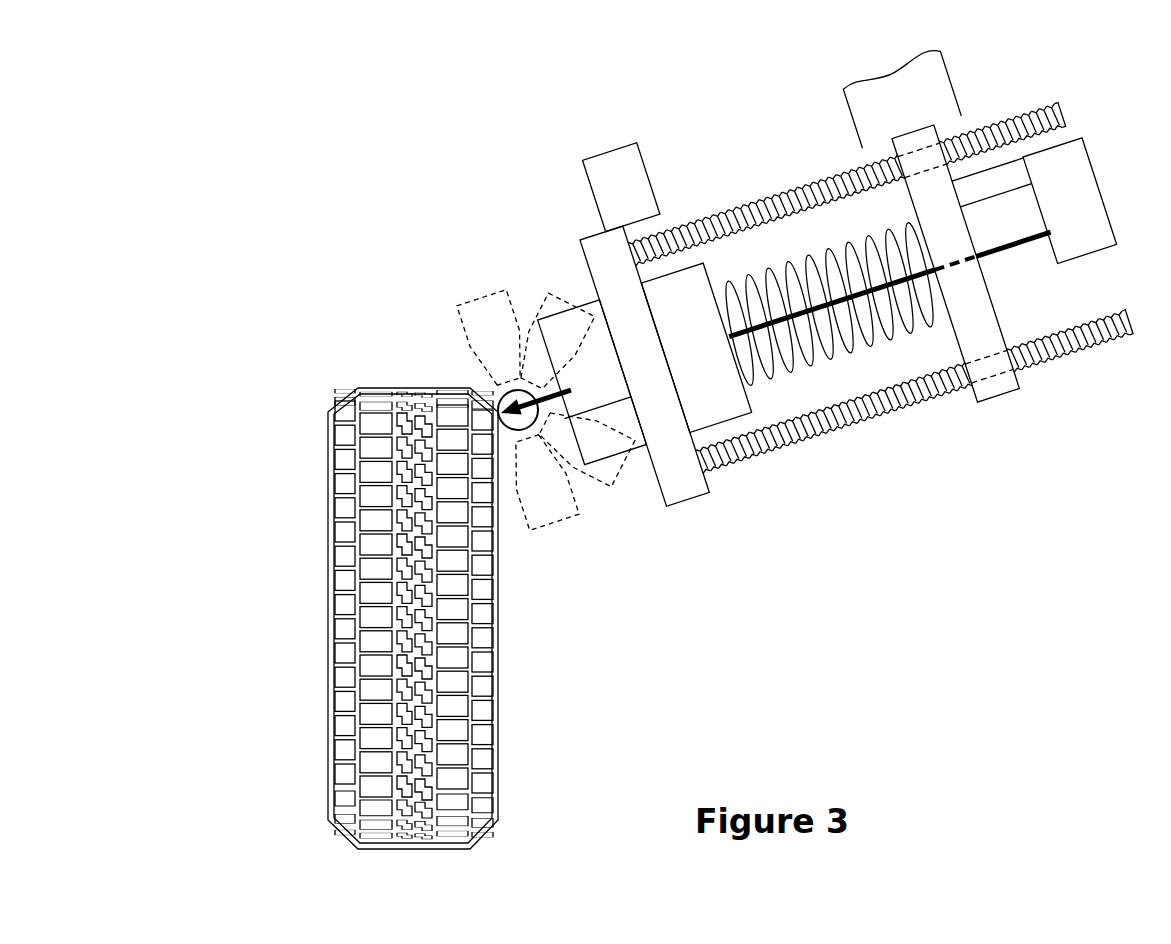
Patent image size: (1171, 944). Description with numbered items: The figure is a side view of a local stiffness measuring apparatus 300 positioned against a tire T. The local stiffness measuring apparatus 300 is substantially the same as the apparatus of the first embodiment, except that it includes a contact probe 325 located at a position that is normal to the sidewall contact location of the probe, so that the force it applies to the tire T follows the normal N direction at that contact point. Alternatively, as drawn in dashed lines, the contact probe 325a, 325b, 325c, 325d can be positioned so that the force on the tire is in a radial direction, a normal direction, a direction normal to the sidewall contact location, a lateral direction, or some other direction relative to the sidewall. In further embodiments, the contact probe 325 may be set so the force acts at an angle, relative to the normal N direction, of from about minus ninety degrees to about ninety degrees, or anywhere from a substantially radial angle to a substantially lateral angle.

The local stiffness measuring apparatus 300 is at (548, 153).
The contact probe 325 is at (607, 393).
The contact probe 325a is at (533, 503).
The contact probe 325b is at (610, 480).
The contact probe 325c is at (485, 340).
The contact probe 325d is at (548, 298).
The normal direction N is at (531, 395).
The tire T is at (316, 714).